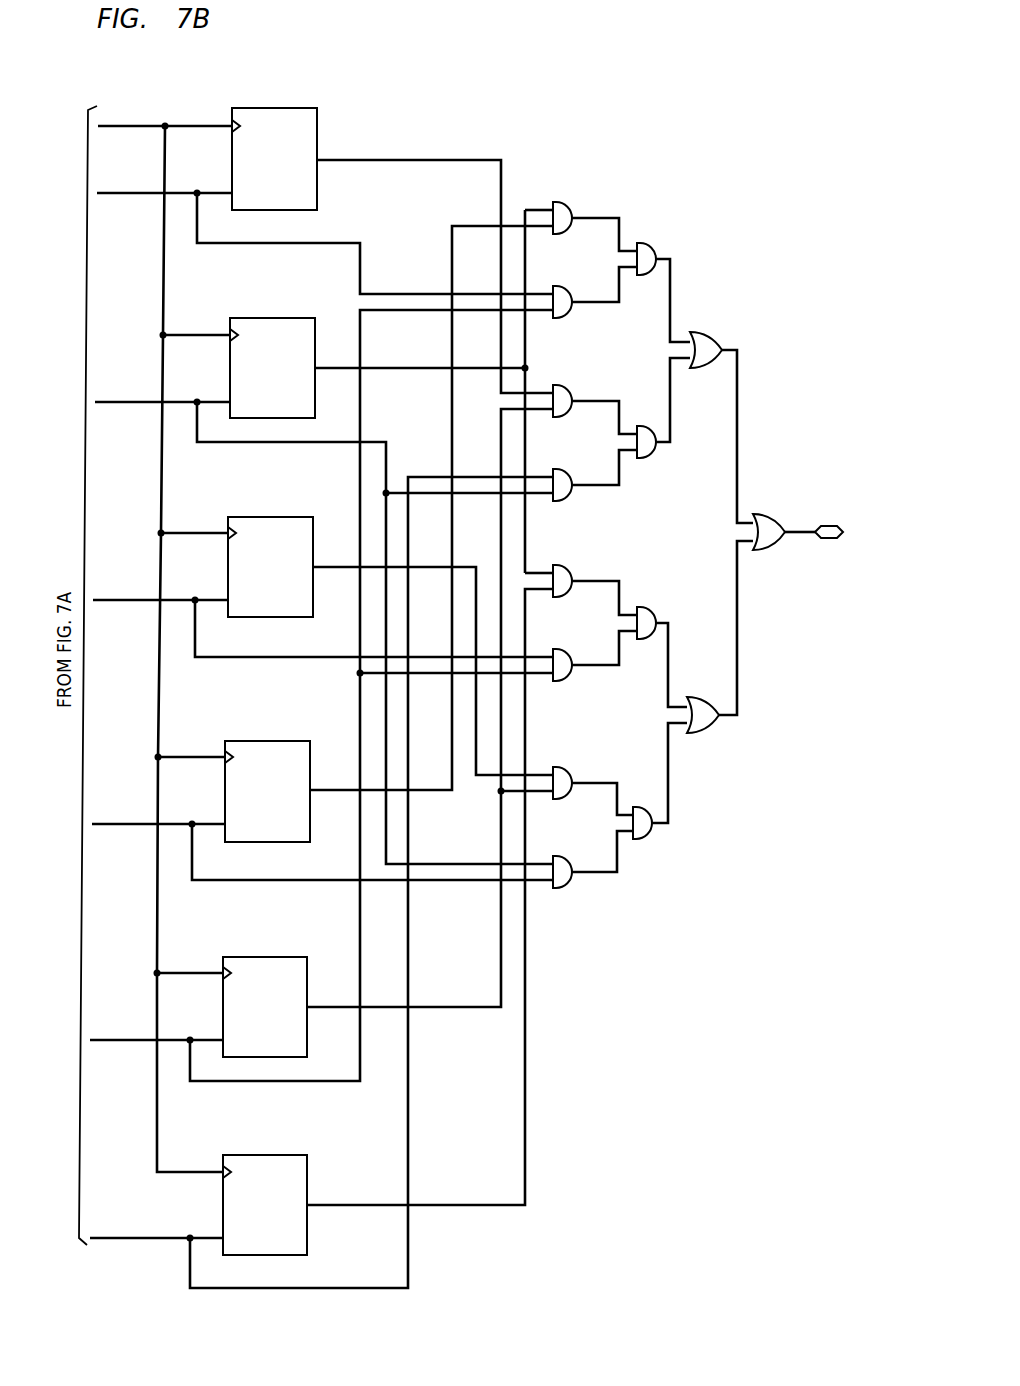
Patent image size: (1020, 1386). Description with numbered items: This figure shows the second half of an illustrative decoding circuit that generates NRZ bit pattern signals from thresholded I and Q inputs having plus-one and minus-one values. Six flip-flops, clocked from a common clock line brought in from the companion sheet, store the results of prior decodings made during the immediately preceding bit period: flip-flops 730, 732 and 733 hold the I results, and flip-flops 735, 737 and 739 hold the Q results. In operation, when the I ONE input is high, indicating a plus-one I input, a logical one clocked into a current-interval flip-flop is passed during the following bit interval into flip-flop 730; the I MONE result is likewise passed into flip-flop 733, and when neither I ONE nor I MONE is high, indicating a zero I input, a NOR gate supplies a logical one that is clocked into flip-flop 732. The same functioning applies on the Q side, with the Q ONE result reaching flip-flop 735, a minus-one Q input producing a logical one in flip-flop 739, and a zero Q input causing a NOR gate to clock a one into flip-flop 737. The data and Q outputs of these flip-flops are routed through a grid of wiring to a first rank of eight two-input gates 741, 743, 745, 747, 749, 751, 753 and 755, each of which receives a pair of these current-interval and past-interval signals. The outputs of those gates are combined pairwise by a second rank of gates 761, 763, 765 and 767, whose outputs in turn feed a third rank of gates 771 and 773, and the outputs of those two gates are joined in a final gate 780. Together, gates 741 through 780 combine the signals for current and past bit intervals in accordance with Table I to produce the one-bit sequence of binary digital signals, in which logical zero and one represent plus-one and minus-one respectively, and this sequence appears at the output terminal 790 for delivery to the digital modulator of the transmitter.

The flip-flop 730 is at (284, 108).
The flip-flop 732 is at (286, 318).
The flip-flop 733 is at (286, 517).
The flip-flop 735 is at (284, 741).
The flip-flop 737 is at (281, 957).
The flip-flop 739 is at (284, 1155).
The gate 741 is at (568, 203).
The gate 743 is at (568, 287).
The gate 745 is at (568, 386).
The gate 747 is at (568, 470).
The gate 749 is at (568, 566).
The gate 751 is at (579, 639).
The gate 753 is at (568, 768).
The gate 755 is at (568, 857).
The gate 761 is at (650, 251).
The gate 763 is at (655, 454).
The gate 765 is at (651, 617).
The gate 767 is at (652, 837).
The gate 771 is at (716, 345).
The gate 773 is at (712, 731).
The gate 780 is at (782, 527).
The output terminal 790 is at (831, 540).